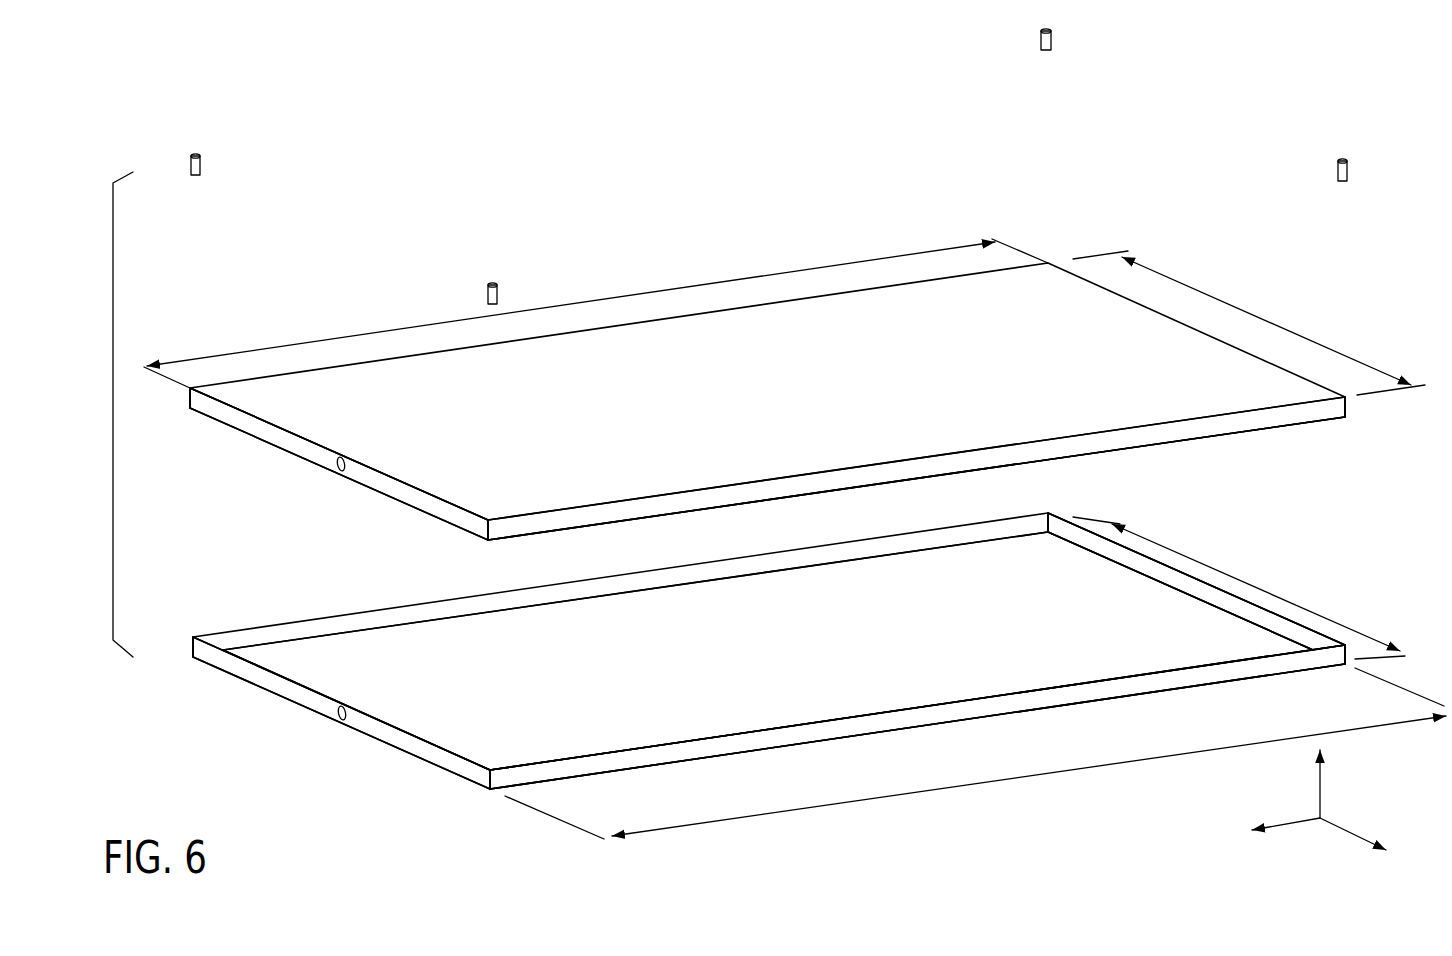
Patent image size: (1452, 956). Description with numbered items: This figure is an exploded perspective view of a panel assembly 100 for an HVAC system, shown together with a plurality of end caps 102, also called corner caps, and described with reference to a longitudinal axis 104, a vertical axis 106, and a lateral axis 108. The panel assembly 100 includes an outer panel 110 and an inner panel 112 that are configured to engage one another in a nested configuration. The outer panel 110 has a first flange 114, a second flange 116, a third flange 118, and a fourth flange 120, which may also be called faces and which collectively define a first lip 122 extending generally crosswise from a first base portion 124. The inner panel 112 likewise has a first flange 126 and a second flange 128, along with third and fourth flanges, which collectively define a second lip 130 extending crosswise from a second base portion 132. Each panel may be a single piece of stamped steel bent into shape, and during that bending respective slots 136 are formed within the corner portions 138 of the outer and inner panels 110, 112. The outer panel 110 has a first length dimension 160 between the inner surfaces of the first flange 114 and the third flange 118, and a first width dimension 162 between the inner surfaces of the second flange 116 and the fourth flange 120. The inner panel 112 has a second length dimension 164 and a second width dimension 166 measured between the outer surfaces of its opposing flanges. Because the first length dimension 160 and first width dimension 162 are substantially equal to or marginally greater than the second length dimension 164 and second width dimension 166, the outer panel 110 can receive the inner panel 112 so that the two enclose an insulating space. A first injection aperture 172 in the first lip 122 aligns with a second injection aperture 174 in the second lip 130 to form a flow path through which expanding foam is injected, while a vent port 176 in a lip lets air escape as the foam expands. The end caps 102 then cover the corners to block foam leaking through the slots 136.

The panel assembly 100 is at (213, 563).
The end caps 102 is at (191, 154).
The longitudinal axis 104 is at (1295, 823).
The vertical axis 106 is at (1325, 786).
The lateral axis 108 is at (1350, 836).
The outer panel 110 is at (751, 760).
The inner panel 112 is at (321, 363).
The first flange 114 is at (388, 738).
The second flange 116 is at (832, 731).
The third flange 118 is at (1222, 600).
The fourth flange 120 is at (332, 626).
The first lip 122 is at (945, 722).
The first base portion 124 is at (975, 678).
The first flange 126 is at (280, 433).
The second flange 128 is at (1170, 441).
The second lip 130 is at (1245, 433).
The second base portion 132 is at (262, 419).
The slots 136 is at (483, 529).
The corner portions 138 is at (184, 404).
The first length dimension 160 is at (1035, 778).
The first width dimension 162 is at (1263, 584).
The second length dimension 164 is at (777, 271).
The second width dimension 166 is at (1267, 316).
The first injection aperture 172 is at (338, 712).
The second injection aperture 174 is at (337, 467).
The vent port 176 is at (1196, 584).